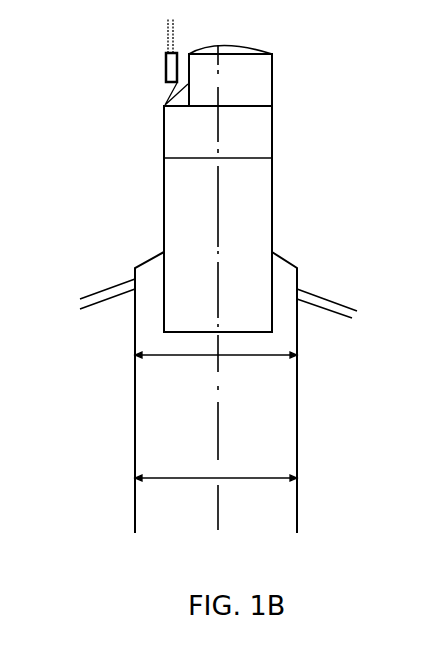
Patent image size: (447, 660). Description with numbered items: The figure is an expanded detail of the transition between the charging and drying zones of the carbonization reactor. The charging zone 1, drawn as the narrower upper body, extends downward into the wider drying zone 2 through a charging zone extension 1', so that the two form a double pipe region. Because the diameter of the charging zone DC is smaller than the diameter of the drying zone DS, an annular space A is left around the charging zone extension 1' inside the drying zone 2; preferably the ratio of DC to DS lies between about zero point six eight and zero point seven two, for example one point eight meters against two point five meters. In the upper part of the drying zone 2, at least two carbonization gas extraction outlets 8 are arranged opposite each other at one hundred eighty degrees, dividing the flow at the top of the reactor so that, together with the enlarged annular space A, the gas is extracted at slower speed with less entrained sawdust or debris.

The charging zone 1 is at (232, 175).
The charging zone extension 1' is at (218, 314).
The drying zone 2 is at (232, 392).
The carbonization gas extraction outlets 8 is at (205, 283).
The annular space A is at (152, 274).
The diameter of the charging zone DC is at (232, 158).
The diameter of the drying zone DS is at (232, 355).